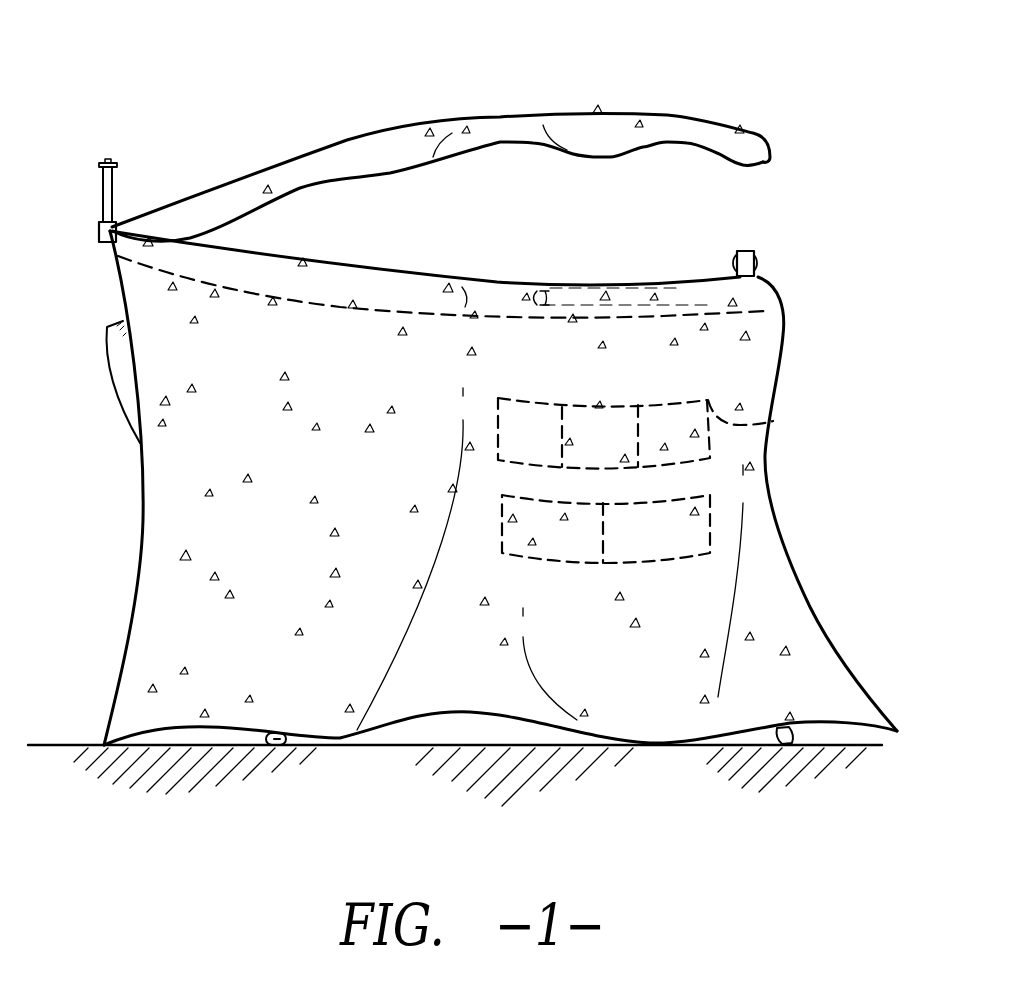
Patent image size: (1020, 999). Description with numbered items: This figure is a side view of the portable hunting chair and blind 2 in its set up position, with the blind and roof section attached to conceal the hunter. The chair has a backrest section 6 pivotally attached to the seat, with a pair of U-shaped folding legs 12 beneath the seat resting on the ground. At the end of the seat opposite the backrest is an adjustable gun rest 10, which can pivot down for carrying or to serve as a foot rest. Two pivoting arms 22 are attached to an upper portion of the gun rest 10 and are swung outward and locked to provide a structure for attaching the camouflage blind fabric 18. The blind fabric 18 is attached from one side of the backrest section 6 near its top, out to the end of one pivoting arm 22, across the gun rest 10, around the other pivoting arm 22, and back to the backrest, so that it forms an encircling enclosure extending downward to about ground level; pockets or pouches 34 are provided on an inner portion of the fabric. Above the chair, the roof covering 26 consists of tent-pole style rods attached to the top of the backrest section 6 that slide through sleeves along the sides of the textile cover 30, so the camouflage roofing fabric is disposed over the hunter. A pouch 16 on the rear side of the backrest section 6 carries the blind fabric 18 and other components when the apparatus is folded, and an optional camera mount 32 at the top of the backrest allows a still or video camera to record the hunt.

The portable hunting chair and blind 2 is at (213, 90).
The backrest section 6 is at (120, 286).
The adjustable gun rest 10 is at (745, 253).
The folding legs 12 is at (282, 737).
The pouch 16 is at (109, 377).
The blind fabric 18 is at (157, 639).
The pivoting arms 22 is at (568, 286).
The roof covering 26 is at (342, 140).
The textile cover 30 is at (582, 127).
The camera mount 32 is at (100, 193).
The pockets or pouches 34 is at (773, 421).